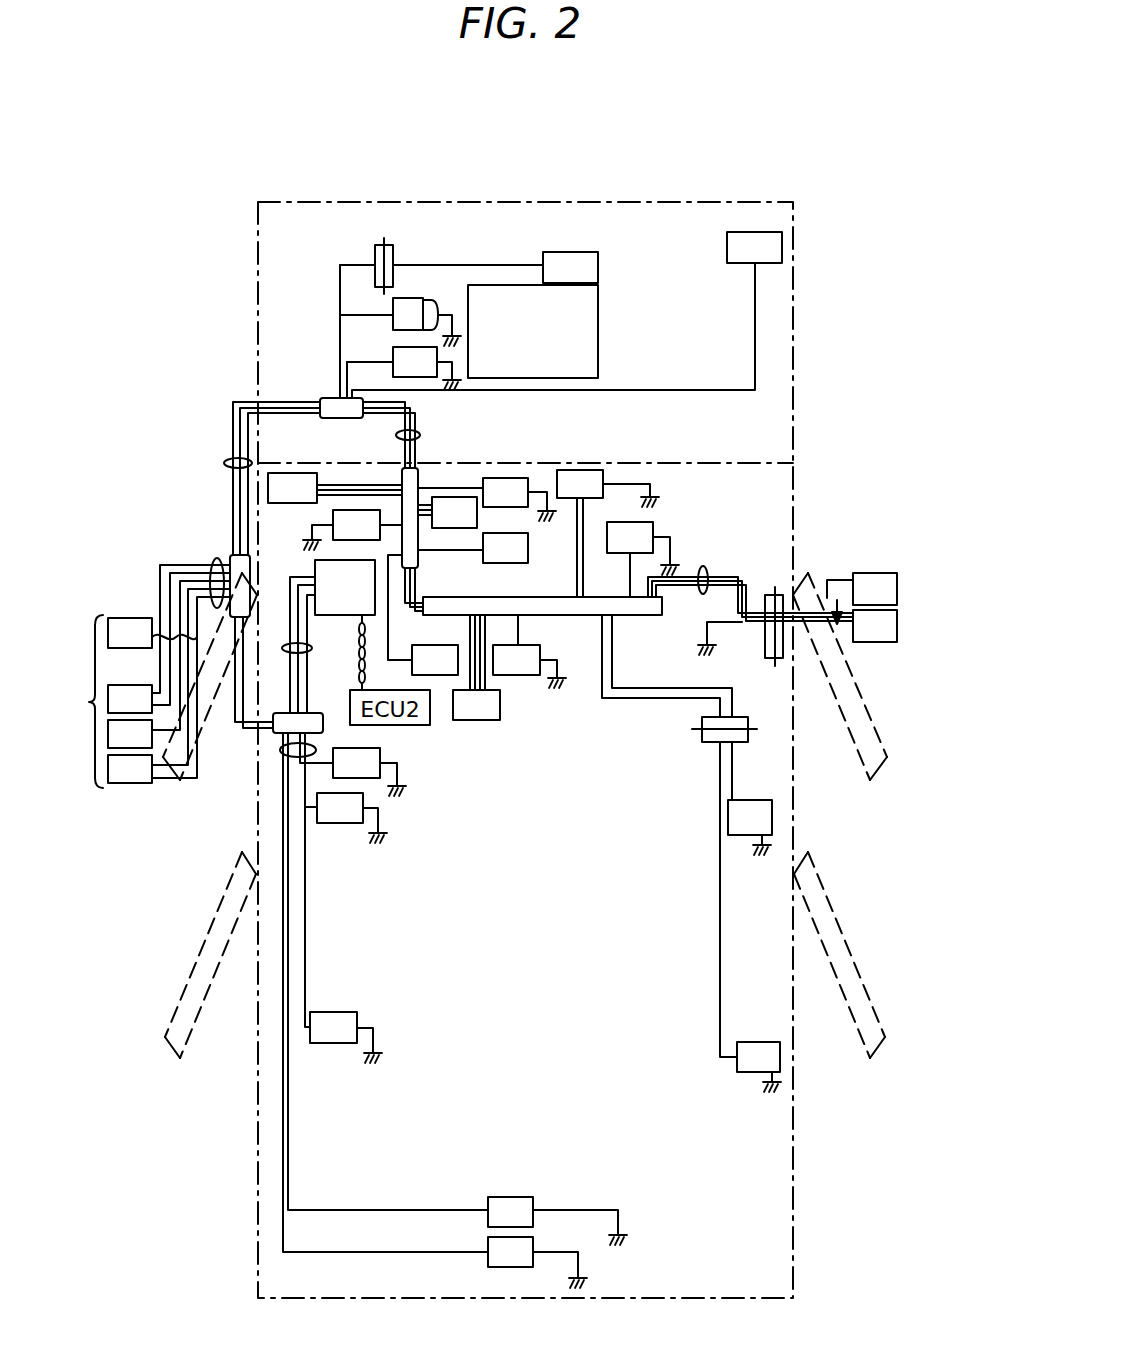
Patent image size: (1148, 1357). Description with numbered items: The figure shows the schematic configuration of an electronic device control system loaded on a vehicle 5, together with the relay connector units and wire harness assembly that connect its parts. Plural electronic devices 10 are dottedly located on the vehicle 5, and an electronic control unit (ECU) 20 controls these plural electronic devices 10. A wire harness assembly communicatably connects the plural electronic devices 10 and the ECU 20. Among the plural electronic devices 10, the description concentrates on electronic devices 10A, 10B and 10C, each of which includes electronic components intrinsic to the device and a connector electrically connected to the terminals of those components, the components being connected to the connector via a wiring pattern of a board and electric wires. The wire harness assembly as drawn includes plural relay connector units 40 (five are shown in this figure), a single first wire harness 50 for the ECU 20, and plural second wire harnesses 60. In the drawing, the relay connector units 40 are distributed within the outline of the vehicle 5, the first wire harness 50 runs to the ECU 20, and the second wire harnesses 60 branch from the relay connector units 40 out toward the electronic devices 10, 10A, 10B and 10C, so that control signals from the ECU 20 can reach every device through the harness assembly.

The vehicle 5 is at (615, 171).
The electronic devices 10 is at (553, 252).
The electronic device 10A is at (382, 748).
The electronic device 10B is at (340, 823).
The electronic device 10C is at (334, 1043).
The electronic control unit (ECU) 20 is at (315, 575).
The relay connector units 40 is at (320, 402).
The first wire harness 50 is at (224, 467).
The second wire harnesses 60 is at (215, 560).